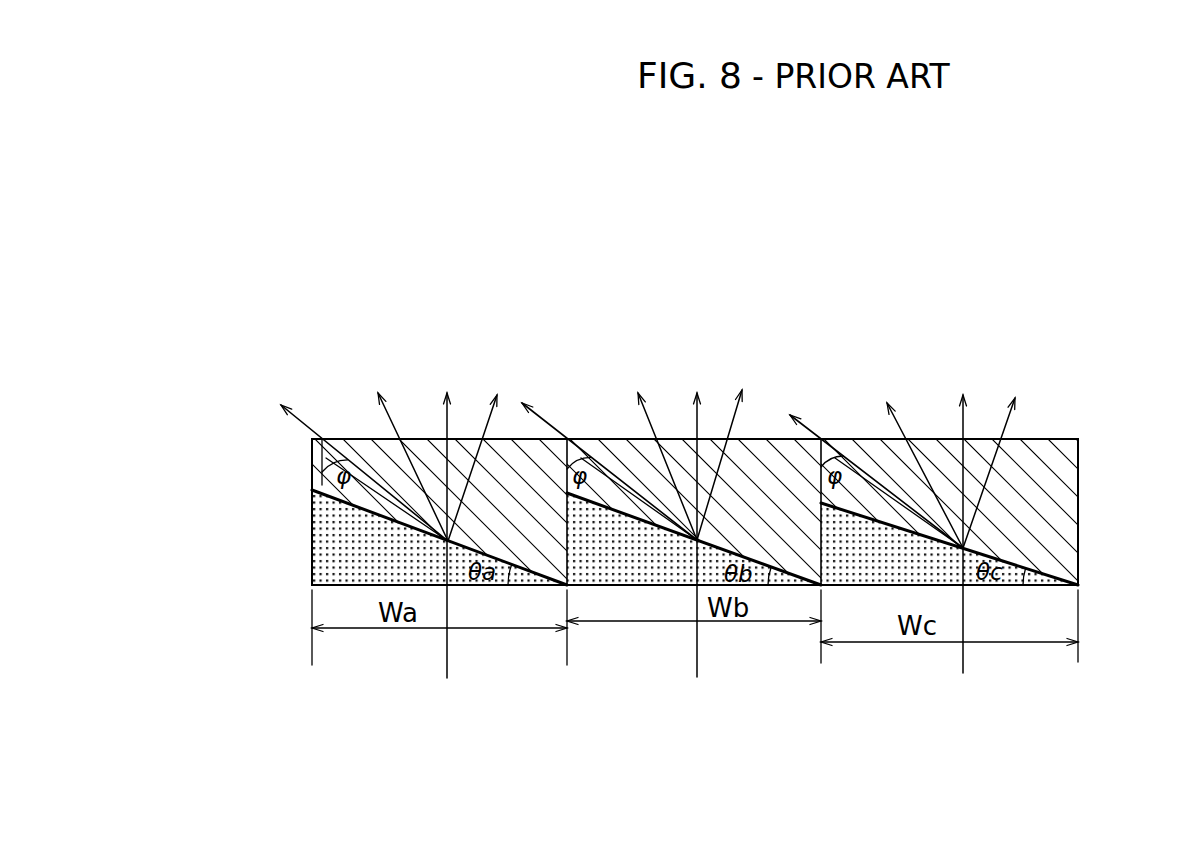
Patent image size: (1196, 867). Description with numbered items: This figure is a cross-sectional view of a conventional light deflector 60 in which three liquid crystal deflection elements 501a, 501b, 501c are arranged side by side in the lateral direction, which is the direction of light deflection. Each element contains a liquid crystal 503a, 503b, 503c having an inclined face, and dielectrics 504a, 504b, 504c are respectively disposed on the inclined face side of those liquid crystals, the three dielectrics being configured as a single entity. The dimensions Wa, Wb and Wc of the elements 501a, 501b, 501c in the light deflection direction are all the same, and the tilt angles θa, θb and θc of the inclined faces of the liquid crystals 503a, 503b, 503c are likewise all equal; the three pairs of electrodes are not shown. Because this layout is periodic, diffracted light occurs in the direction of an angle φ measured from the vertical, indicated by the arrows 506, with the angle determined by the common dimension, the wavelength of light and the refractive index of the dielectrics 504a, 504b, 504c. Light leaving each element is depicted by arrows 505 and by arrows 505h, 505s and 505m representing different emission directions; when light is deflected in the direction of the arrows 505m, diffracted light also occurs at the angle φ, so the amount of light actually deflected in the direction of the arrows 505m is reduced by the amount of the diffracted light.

The light deflector 60 is at (245, 363).
The liquid crystal deflection element 501a is at (567, 720).
The liquid crystal deflection element 501b is at (821, 720).
The liquid crystal deflection element 501c is at (1078, 720).
The liquid crystal 503a is at (372, 555).
The liquid crystal 503b is at (615, 560).
The liquid crystal 503c is at (985, 553).
The dielectric 504a is at (370, 447).
The dielectric 504b is at (757, 455).
The dielectric 504c is at (1062, 455).
The emission center axis 505 is at (447, 663).
The high-angle emitted light 505h is at (382, 405).
The central emitted light 505s is at (450, 402).
The arrows indicating deflected light direction 505m is at (502, 401).
The arrows indicating diffracted light direction 506 is at (303, 421).